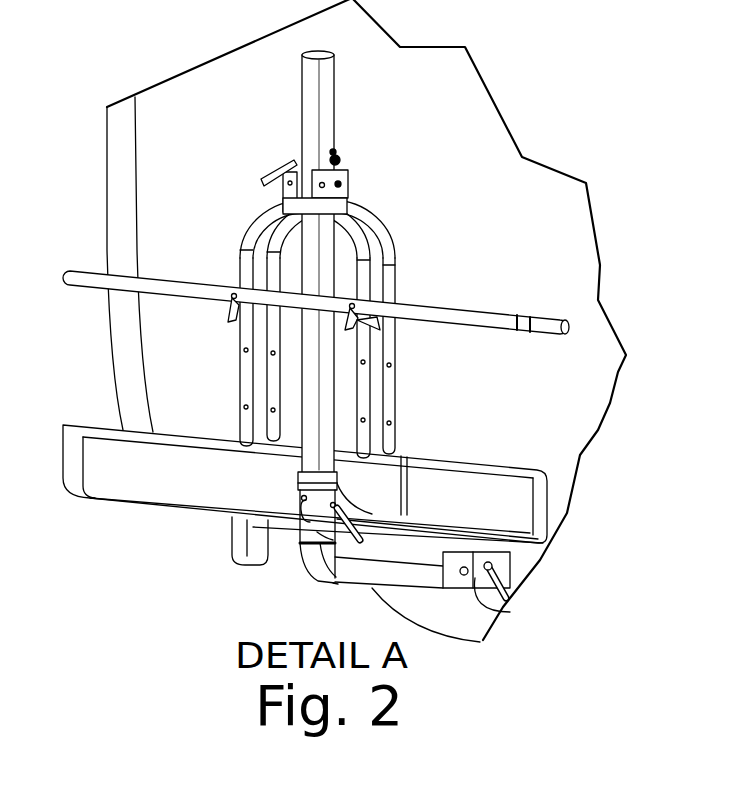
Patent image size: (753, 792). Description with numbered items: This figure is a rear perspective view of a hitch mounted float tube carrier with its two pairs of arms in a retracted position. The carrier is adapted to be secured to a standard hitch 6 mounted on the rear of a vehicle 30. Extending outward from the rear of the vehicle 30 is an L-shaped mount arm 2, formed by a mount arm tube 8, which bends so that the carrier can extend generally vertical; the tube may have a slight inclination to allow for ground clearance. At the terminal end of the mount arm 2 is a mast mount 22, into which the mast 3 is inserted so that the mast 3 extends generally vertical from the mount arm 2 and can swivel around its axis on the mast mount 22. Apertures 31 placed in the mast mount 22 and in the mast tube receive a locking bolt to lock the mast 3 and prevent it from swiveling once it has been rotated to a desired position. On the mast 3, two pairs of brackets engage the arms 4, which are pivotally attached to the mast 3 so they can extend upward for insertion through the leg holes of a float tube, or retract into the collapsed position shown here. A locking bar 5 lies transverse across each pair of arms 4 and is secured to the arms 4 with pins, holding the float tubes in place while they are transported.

The mount arm 2 is at (507, 613).
The mast 3 is at (305, 143).
The arm 4 is at (258, 213).
The locking bar 5 is at (550, 317).
The hitch 6 is at (503, 563).
The mount arm tube 8 is at (310, 558).
The mast mount 22 is at (330, 567).
The vehicle 30 is at (500, 165).
The apertures 31 is at (290, 533).